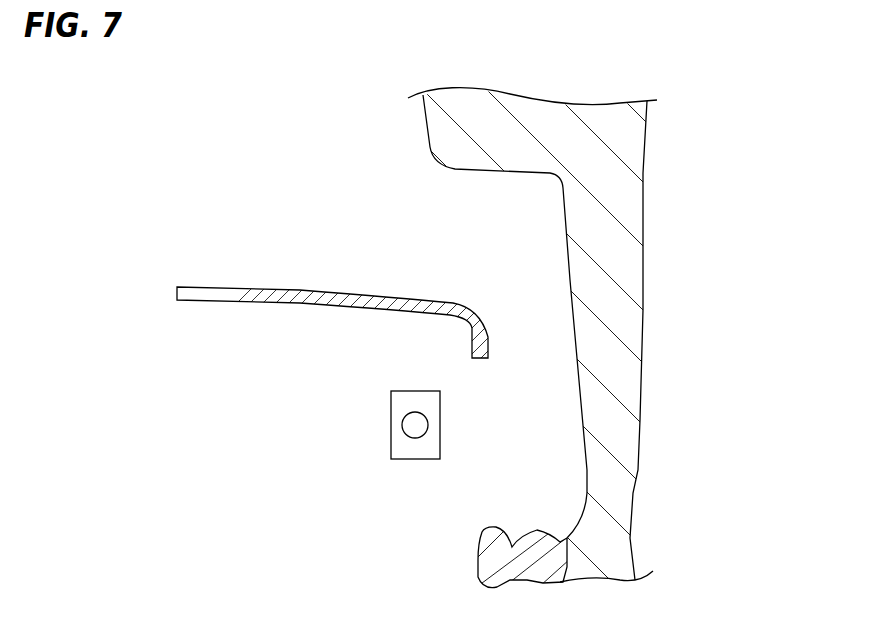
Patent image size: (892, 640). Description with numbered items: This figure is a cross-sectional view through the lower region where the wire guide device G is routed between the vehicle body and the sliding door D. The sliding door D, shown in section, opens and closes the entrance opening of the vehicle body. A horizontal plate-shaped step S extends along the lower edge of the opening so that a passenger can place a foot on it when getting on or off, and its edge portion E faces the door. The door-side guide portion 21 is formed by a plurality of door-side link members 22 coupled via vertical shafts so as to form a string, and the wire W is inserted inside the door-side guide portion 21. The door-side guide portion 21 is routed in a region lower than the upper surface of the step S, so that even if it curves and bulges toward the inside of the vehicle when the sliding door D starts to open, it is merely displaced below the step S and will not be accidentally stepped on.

The sliding door D is at (633, 222).
The step S is at (223, 287).
The end portion of seat E is at (485, 337).
The wire guide device G is at (140, 173).
The wire W is at (413, 425).
The door-side guide portion 21 is at (467, 418).
The door-side link members 22 is at (441, 440).